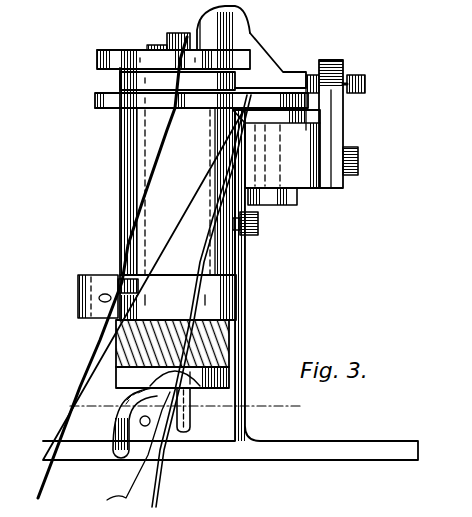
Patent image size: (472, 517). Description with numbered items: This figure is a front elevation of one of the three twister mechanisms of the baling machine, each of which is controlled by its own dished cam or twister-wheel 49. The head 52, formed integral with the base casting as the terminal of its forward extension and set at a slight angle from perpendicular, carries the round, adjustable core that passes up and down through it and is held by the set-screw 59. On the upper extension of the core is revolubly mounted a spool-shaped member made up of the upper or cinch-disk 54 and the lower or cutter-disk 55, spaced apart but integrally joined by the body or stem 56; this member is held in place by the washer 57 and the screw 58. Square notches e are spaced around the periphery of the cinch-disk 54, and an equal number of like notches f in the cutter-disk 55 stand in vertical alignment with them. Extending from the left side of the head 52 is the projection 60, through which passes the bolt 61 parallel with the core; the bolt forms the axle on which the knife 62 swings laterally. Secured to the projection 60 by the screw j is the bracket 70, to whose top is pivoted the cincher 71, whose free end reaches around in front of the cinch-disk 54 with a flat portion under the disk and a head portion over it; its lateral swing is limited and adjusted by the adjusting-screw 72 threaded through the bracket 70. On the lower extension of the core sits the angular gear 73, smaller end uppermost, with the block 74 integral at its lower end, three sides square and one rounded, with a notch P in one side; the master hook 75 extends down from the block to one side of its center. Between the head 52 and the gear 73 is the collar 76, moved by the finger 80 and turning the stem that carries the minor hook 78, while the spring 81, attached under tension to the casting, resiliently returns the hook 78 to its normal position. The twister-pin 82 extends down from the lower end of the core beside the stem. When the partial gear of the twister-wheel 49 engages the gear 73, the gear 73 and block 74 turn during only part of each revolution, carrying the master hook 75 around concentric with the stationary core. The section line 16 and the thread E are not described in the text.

The section line 16 is at (60, 400).
The twister-wheel 49 is at (138, 280).
The head 52 is at (185, 140).
The cinch-disk 54 is at (97, 58).
The cutter-disk 55 is at (96, 102).
The stem 56 is at (120, 80).
The washer 57 is at (150, 47).
The screw 58 is at (175, 34).
The set-screw 59 is at (259, 226).
The projection 60 is at (302, 190).
The bolt 61 is at (290, 206).
The knife 62 is at (307, 112).
The bracket 70 is at (341, 66).
The cincher 71 is at (277, 81).
The adjusting-screw 72 is at (365, 82).
The angular gear 73 is at (228, 348).
The block 74 is at (240, 378).
The master hook 75 is at (114, 424).
The collar 76 is at (241, 300).
The minor hook 78 is at (143, 457).
The finger 80 is at (118, 282).
The spring 81 is at (102, 303).
The twister-pin 82 is at (192, 418).
The notches e is at (98, 50).
The notches f is at (99, 110).
The screw j is at (358, 160).
The notch P is at (158, 371).
The thread E is at (46, 478).